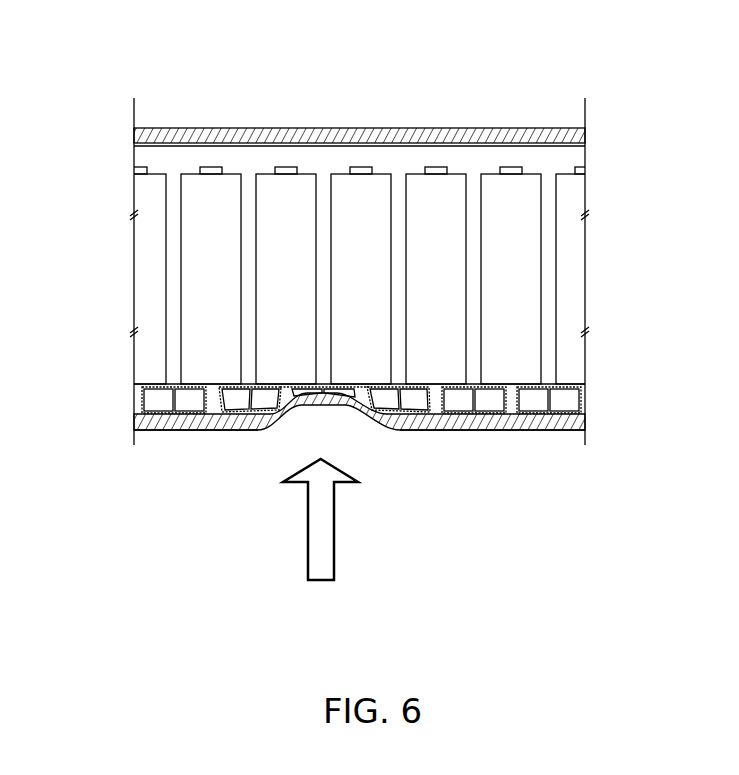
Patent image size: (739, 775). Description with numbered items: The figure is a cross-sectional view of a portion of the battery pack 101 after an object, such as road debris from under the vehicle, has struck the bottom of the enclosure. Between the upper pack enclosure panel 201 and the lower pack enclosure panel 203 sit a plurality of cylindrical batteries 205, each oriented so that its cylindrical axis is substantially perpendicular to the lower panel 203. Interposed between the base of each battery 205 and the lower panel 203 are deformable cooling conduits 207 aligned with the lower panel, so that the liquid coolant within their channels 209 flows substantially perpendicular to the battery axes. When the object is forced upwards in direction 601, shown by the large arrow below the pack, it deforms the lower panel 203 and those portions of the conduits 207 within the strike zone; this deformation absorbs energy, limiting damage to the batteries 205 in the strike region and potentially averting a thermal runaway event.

The battery pack 101 is at (560, 75).
The upper pack enclosure panel 201 is at (255, 127).
The lower pack enclosure panel 203 is at (577, 422).
The batteries 205 is at (191, 282).
The deformable cooling conduits 207 is at (185, 428).
The channels 209 is at (160, 400).
The direction 601 is at (320, 548).